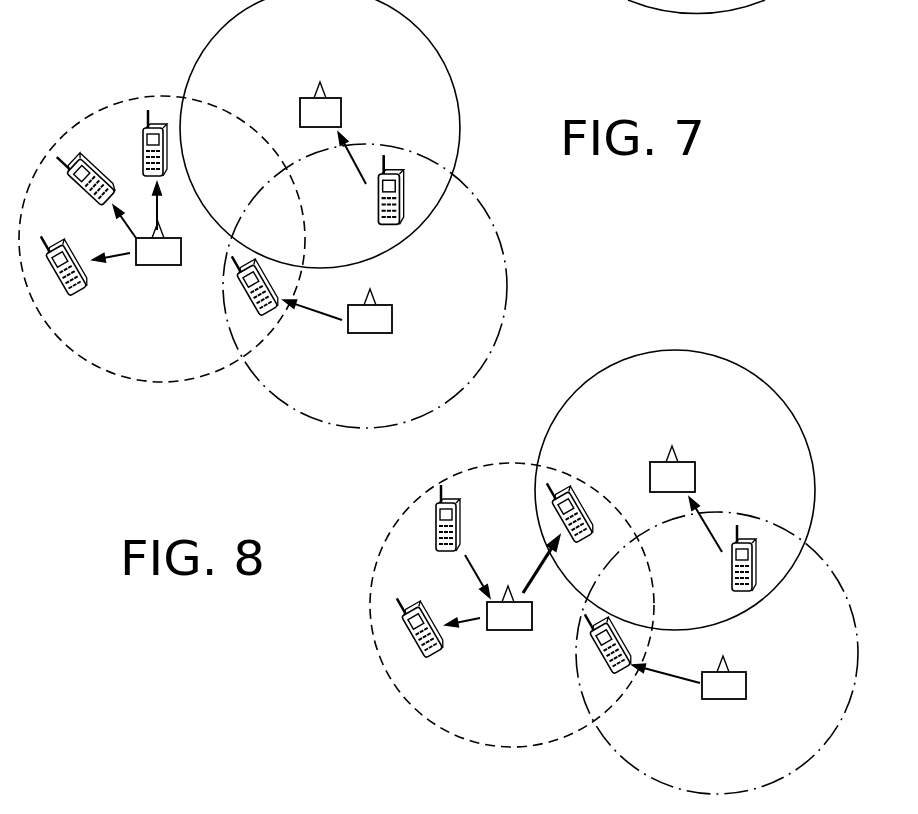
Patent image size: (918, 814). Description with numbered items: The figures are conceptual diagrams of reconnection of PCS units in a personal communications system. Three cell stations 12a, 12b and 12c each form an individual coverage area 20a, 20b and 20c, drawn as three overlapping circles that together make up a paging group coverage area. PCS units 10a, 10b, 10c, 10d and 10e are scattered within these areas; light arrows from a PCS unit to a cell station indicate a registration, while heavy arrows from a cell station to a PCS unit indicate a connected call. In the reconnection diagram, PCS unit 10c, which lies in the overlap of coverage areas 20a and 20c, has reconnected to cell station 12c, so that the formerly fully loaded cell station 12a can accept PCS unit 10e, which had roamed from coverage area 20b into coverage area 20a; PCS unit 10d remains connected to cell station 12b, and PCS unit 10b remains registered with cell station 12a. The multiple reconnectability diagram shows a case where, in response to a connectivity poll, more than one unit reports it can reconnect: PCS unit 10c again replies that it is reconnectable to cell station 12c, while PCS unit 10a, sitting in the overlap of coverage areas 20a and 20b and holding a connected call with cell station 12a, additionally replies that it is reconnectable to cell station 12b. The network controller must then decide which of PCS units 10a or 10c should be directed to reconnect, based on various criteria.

In FIG. 7, the PCS unit 10a is at (81, 192).
In FIG. 8, the PCS unit 10a is at (582, 545).
In FIG. 7, the PCS unit 10b is at (78, 300).
In FIG. 8, the PCS unit 10b is at (430, 660).
In FIG. 7, the PCS unit 10c is at (255, 307).
In FIG. 8, the PCS unit 10c is at (610, 675).
In FIG. 7, the PCS unit 10d is at (376, 216).
In FIG. 8, the PCS unit 10d is at (730, 578).
In FIG. 7, the PCS unit 10e is at (143, 143).
In FIG. 8, the PCS unit 10e is at (434, 550).
In FIG. 7, the cell station 12a is at (136, 224).
In FIG. 8, the cell station 12a is at (502, 583).
In FIG. 7, the cell station 12b is at (320, 105).
In FIG. 8, the cell station 12b is at (672, 469).
In FIG. 7, the cell station 12c is at (337, 311).
In FIG. 8, the cell station 12c is at (689, 678).
In FIG. 7, the coverage area 20a is at (181, 369).
In FIG. 8, the coverage area 20a is at (531, 732).
In FIG. 7, the coverage area 20b is at (342, 24).
In FIG. 8, the coverage area 20b is at (693, 390).
In FIG. 7, the coverage area 20c is at (390, 417).
In FIG. 8, the coverage area 20c is at (743, 781).